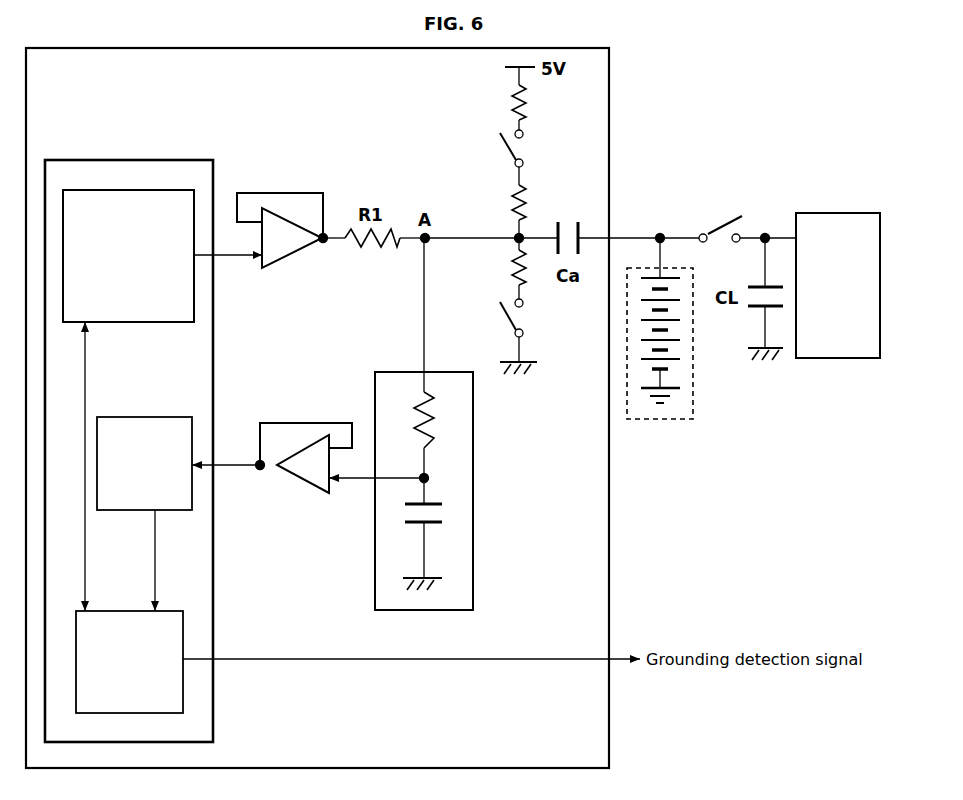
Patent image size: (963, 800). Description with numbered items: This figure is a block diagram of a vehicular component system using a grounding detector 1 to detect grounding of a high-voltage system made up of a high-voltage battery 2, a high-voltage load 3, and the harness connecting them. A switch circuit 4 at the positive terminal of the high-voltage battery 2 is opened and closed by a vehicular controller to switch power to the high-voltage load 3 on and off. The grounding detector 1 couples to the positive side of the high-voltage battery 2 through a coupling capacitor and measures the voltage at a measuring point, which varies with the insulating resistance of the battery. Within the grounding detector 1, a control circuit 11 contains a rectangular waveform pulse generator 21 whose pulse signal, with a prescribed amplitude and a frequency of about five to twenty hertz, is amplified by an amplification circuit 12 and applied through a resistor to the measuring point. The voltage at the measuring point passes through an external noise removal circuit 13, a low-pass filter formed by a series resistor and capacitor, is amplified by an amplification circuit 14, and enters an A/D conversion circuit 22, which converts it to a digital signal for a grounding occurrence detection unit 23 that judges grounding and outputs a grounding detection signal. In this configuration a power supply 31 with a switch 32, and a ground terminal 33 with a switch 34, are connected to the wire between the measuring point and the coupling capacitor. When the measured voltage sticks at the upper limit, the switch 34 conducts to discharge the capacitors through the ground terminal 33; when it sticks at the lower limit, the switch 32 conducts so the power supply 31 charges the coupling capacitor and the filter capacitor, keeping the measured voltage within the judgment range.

The grounding detector 1 is at (609, 542).
The high-voltage battery 2 is at (668, 420).
The high-voltage load 3 is at (833, 213).
The switch circuit 4 is at (729, 203).
The control circuit 11 is at (213, 166).
The amplification circuit 12 is at (288, 256).
The external noise removal circuit 13 is at (468, 372).
The amplification circuit 14 is at (310, 490).
The rectangular waveform pulse generator 21 is at (160, 323).
The A/D conversion circuit 22 is at (175, 512).
The grounding occurrence detection unit 23 is at (116, 610).
The power supply 31 is at (505, 75).
The switch 32 is at (535, 150).
The ground terminal 33 is at (530, 378).
The switch 34 is at (530, 317).